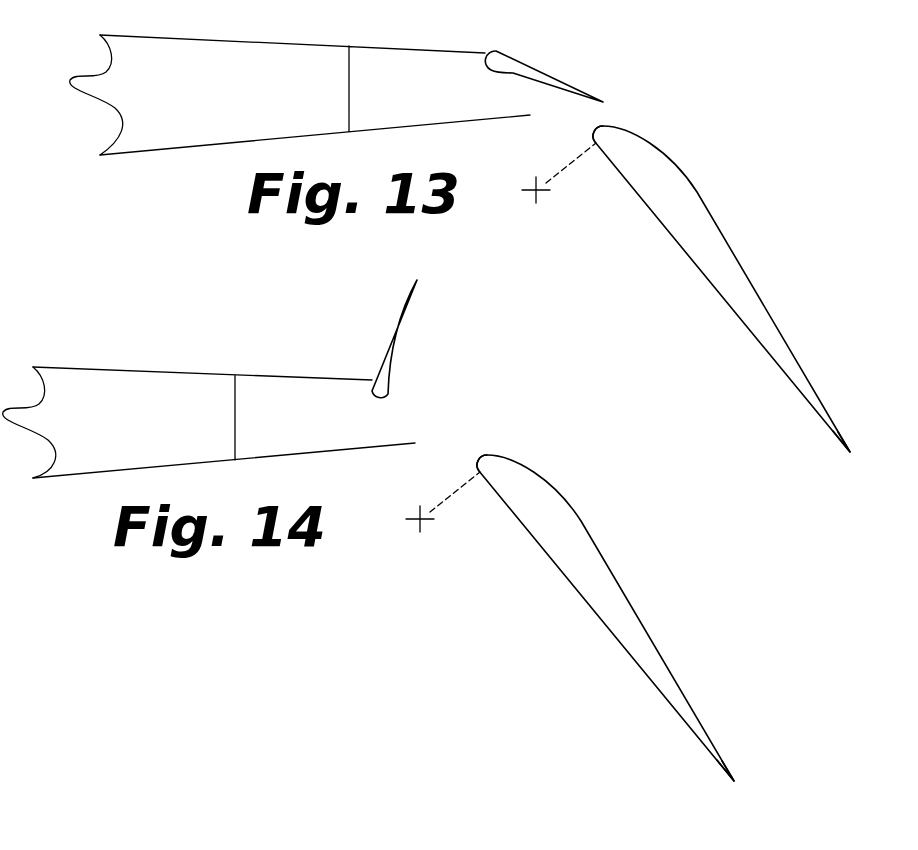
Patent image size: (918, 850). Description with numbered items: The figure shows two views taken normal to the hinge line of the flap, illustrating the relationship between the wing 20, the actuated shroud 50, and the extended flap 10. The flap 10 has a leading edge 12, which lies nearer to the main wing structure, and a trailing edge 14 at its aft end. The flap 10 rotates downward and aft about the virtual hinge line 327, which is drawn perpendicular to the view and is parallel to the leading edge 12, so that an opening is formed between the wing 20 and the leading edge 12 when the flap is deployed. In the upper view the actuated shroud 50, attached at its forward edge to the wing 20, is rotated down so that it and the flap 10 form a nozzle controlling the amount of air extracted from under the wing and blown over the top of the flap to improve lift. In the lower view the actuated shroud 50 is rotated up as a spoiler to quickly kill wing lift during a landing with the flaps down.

In FIG. 13, the flap 10 is at (707, 285).
In FIG. 14, the flap 10 is at (605, 618).
In FIG. 13, the leading edge 12 is at (592, 137).
In FIG. 14, the leading edge 12 is at (447, 469).
In FIG. 13, the trailing edge 14 is at (848, 455).
In FIG. 14, the trailing edge 14 is at (700, 787).
In FIG. 13, the wing 20 is at (230, 106).
In FIG. 14, the wing 20 is at (105, 433).
In FIG. 13, the actuated shroud 50 is at (548, 70).
In FIG. 14, the actuated shroud 50 is at (392, 335).
In FIG. 13, the hinge line 327 is at (545, 200).
In FIG. 14, the hinge line 327 is at (449, 525).